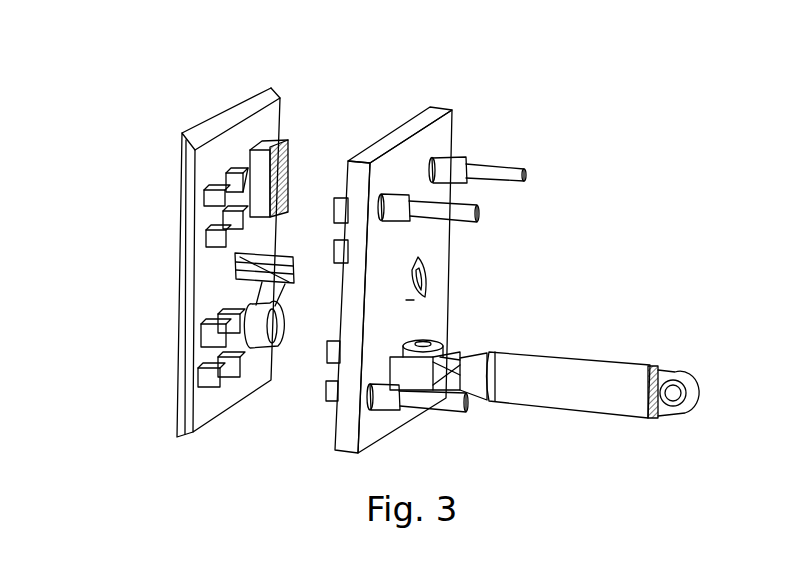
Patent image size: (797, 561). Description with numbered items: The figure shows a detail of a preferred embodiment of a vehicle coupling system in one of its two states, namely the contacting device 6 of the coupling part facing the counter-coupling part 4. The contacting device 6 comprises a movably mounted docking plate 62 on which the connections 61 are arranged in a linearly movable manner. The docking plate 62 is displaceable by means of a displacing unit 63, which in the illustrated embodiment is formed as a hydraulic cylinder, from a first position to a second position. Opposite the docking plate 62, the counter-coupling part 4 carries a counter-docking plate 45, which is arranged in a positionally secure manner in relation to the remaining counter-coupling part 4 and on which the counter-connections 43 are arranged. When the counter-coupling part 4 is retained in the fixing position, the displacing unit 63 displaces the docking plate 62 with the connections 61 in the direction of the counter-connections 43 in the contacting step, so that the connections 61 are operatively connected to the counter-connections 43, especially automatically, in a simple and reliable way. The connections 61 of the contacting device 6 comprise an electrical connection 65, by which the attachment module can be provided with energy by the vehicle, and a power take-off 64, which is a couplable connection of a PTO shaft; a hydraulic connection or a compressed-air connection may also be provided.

The counter-coupling part 4 is at (92, 440).
The contacting device 6 is at (540, 76).
The counter-connections 43 is at (200, 366).
The counter-docking plate 45 is at (177, 396).
The connections 61 is at (453, 216).
The docking plate 62 is at (440, 128).
The displacing unit 63 is at (530, 380).
The power take-off 64 is at (407, 257).
The electrical connection 65 is at (330, 390).